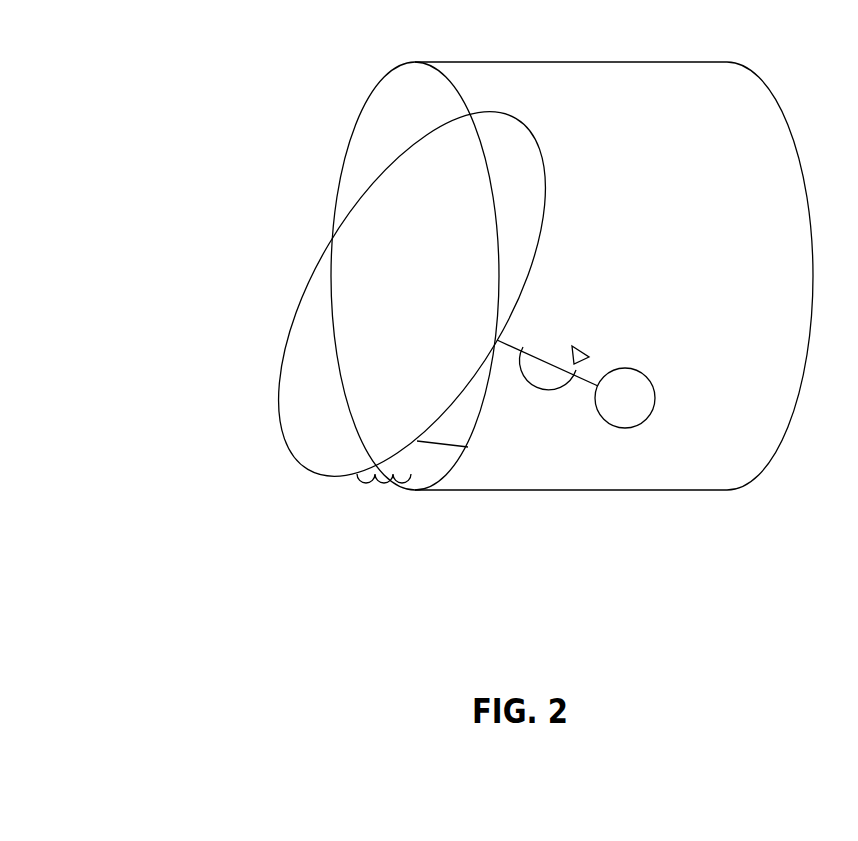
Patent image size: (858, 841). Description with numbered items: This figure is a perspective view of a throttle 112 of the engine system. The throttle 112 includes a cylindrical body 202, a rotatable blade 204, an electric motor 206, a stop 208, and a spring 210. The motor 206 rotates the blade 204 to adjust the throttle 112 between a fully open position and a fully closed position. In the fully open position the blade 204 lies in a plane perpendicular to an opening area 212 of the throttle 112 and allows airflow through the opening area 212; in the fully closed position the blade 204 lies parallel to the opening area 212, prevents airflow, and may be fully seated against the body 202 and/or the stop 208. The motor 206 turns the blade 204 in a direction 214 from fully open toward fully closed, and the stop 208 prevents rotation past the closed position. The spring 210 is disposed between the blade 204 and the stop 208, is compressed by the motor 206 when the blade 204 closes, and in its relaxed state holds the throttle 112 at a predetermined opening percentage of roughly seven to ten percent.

The throttle 112 is at (141, 51).
The cylindrical body 202 is at (556, 62).
The rotatable blade 204 is at (283, 388).
The electric motor 206 is at (655, 398).
The stop 208 is at (440, 467).
The spring 210 is at (363, 484).
The opening area 212 is at (370, 145).
The direction 214 is at (548, 392).